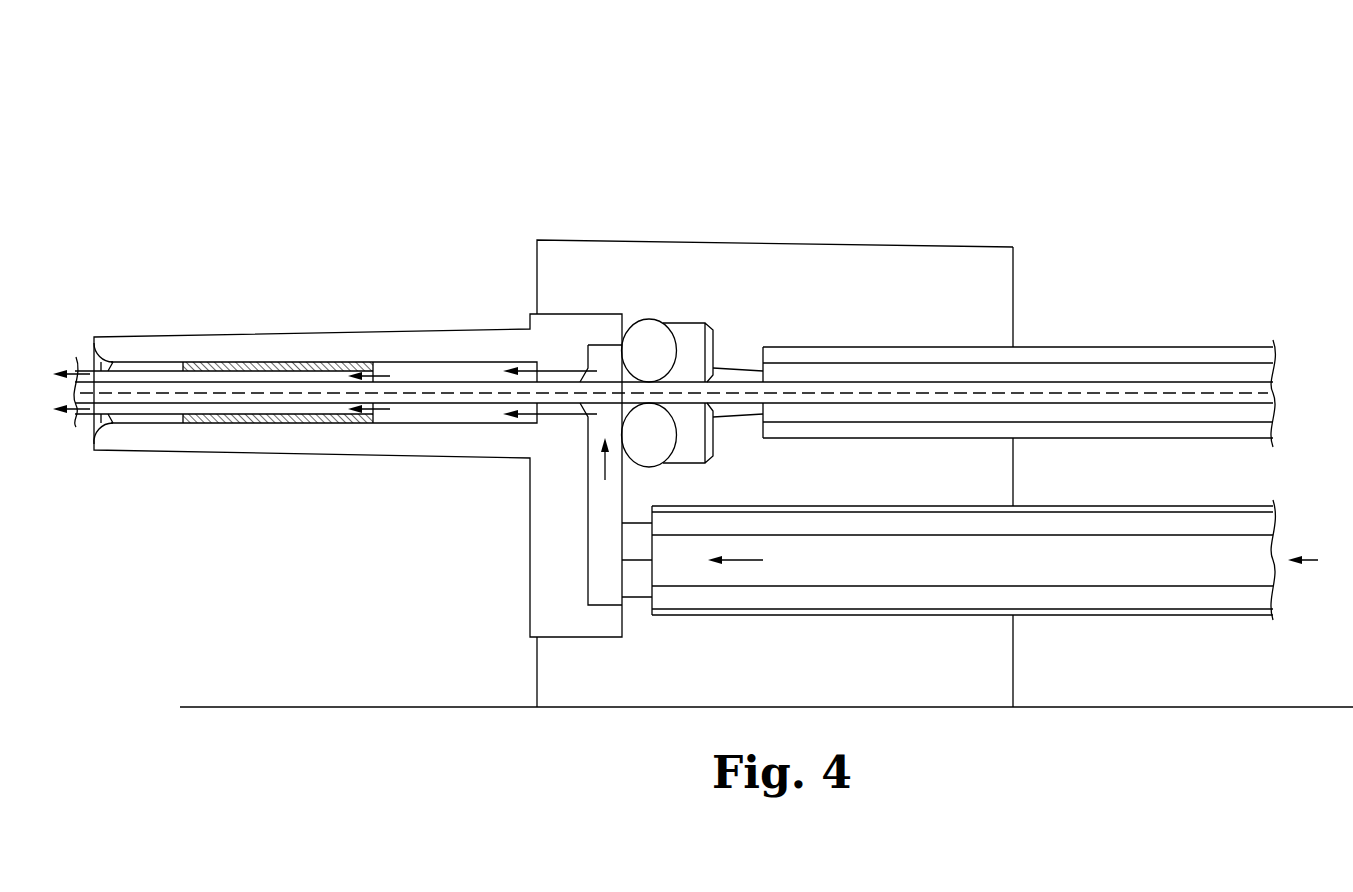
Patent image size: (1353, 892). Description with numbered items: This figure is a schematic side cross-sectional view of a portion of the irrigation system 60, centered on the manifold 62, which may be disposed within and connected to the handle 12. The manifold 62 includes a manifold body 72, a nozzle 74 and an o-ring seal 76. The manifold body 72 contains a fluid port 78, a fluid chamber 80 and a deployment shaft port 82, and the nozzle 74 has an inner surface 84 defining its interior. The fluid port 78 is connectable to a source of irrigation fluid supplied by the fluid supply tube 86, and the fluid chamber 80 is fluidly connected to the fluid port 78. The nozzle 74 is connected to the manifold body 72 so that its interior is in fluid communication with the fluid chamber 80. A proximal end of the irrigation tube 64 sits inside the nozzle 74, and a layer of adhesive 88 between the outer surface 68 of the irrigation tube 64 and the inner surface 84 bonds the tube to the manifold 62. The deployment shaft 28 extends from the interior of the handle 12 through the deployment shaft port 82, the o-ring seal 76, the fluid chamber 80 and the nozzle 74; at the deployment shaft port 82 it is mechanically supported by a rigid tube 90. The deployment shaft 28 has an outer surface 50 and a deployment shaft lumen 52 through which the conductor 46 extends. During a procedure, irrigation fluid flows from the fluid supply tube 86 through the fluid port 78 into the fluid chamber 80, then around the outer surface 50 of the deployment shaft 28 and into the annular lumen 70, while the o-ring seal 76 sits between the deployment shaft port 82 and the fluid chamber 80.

The handle 12 is at (242, 700).
The deployment shaft 28 is at (1237, 382).
The conductor 46 is at (1107, 393).
The outer surface 50 is at (497, 405).
The deployment shaft lumen 52 is at (1263, 400).
The irrigation system 60 is at (497, 146).
The manifold 62 is at (805, 234).
The irrigation tube 64 is at (82, 366).
The outer surface 68 is at (136, 368).
The annular lumen 70 is at (173, 373).
The manifold body 72 is at (682, 234).
The nozzle 74 is at (389, 463).
The o-ring seal 76 is at (647, 319).
The fluid port 78 is at (1015, 508).
The fluid chamber 80 is at (597, 565).
The deployment shaft port 82 is at (1015, 347).
The inner surface 84 is at (423, 370).
The fluid supply tube 86 is at (1097, 616).
The layer of adhesive 88 is at (278, 364).
The rigid tube 90 is at (1162, 347).